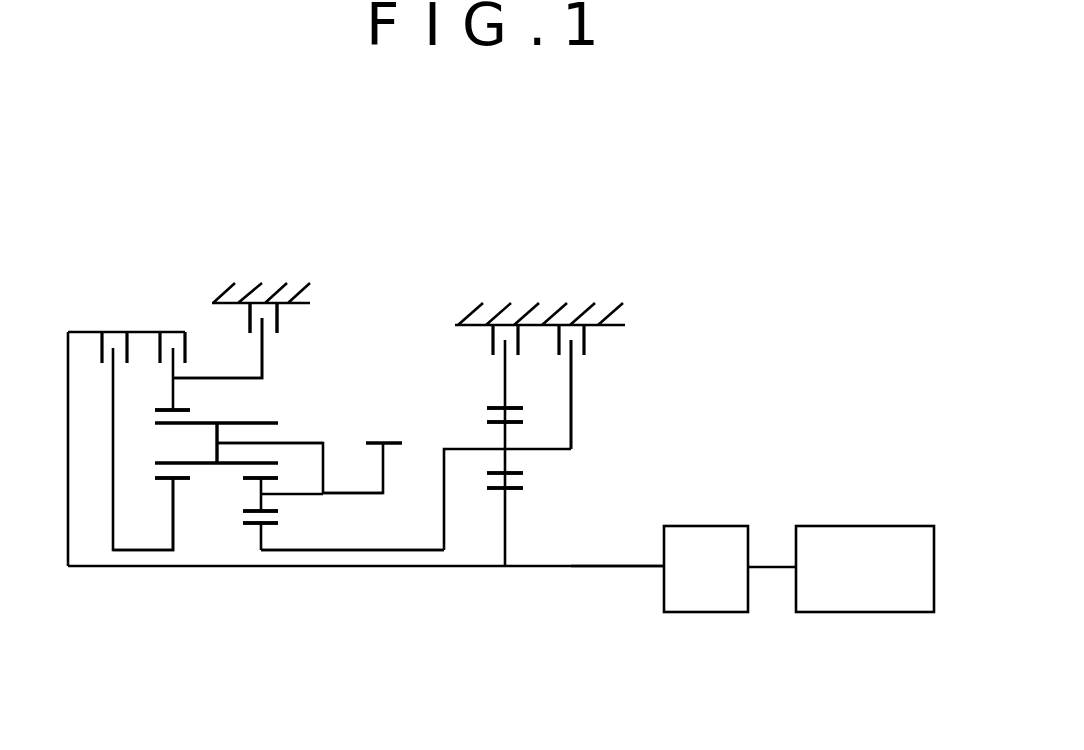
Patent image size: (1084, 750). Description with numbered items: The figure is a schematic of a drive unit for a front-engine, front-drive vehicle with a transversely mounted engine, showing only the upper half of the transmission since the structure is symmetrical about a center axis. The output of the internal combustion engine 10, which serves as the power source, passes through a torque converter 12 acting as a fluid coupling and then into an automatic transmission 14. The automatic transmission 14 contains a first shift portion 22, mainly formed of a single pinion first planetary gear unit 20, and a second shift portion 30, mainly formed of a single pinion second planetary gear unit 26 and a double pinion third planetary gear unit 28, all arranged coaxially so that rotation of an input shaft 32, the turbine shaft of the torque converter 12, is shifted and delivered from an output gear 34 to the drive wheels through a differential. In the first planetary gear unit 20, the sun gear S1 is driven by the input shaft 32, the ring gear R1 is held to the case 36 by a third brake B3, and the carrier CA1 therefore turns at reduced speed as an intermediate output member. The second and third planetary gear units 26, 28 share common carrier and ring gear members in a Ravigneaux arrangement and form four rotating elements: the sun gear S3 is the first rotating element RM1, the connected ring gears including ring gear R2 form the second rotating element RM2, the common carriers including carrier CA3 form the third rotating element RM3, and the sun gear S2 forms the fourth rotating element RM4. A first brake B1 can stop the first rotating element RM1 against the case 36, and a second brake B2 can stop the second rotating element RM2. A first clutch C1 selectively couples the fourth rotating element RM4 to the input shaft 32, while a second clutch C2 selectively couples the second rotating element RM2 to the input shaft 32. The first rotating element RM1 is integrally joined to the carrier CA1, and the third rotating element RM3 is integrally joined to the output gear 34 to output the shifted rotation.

The internal combustion engine 10 is at (905, 526).
The torque converter 12 is at (720, 526).
The automatic transmission 14 is at (608, 222).
The first planetary gear unit 20 is at (485, 590).
The first shift portion 22 is at (436, 332).
The second planetary gear unit 26 is at (173, 567).
The third planetary gear unit 28 is at (263, 567).
The second shift portion 30 is at (326, 293).
The input shaft 32 is at (603, 567).
The output gear 34 is at (393, 437).
The case 36 is at (258, 293).
The first clutch C1 is at (116, 330).
The second clutch C2 is at (174, 330).
The first brake B1 is at (600, 344).
The second brake B2 is at (287, 321).
The third brake B3 is at (484, 344).
The ring gear R1 is at (517, 408).
The sun gear S1 is at (515, 488).
The carrier CA1 is at (571, 418).
The ring gear R2 is at (183, 408).
The sun gear S2 is at (177, 478).
The sun gear S3 is at (263, 523).
The carrier CA3 is at (303, 443).
The first rotating element RM1 is at (337, 551).
The second rotating element RM2 is at (230, 364).
The third rotating element RM3 is at (340, 494).
The fourth rotating element RM4 is at (173, 518).